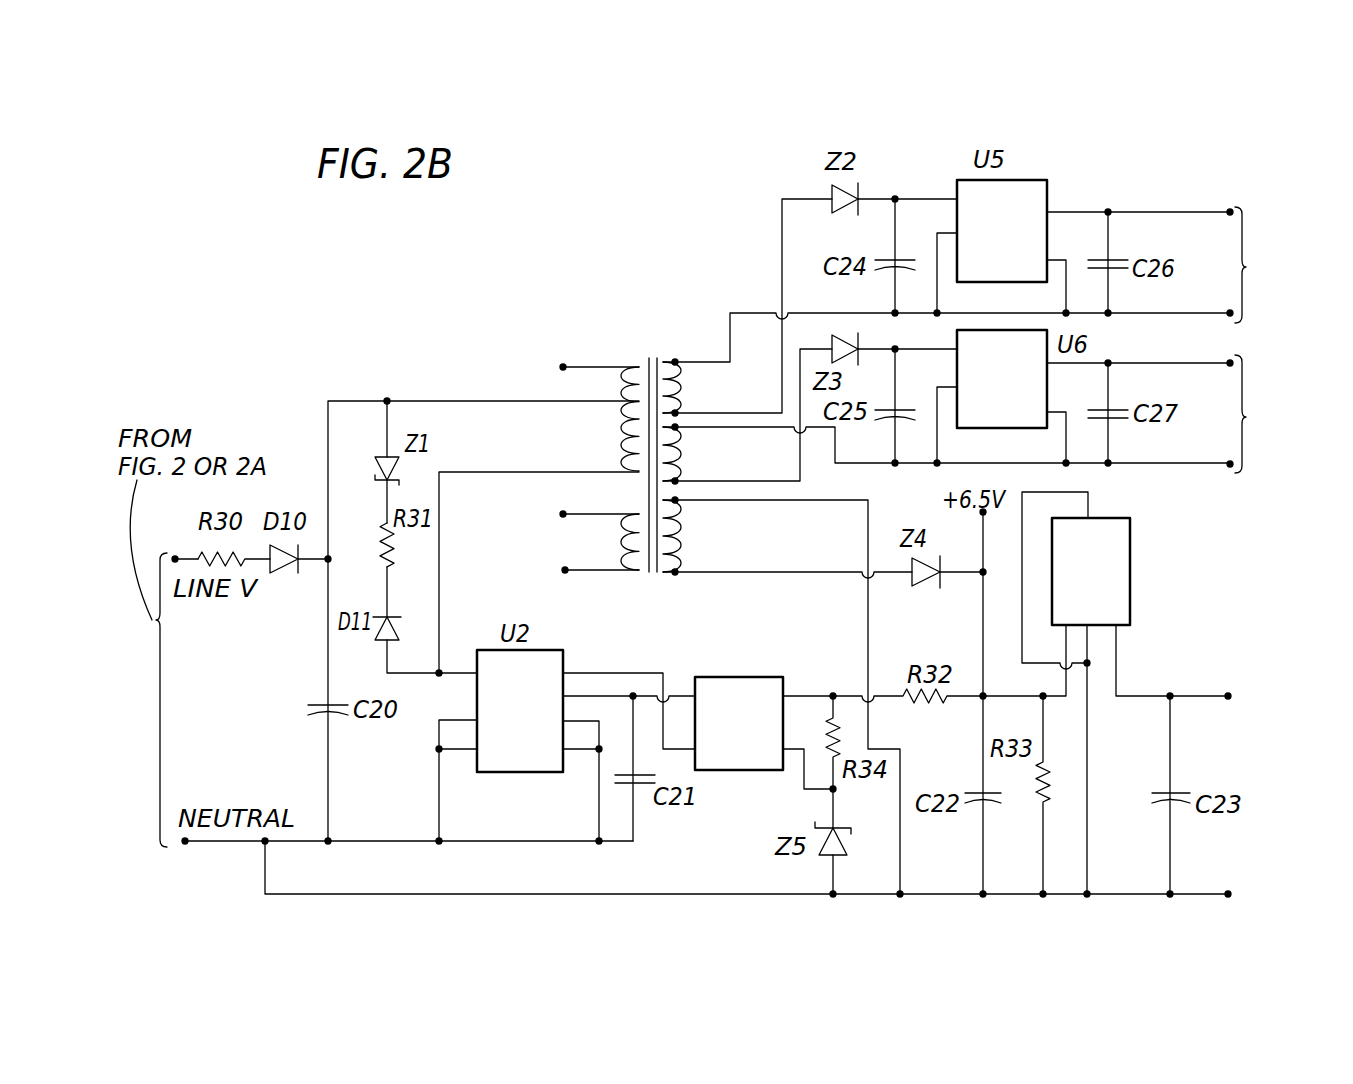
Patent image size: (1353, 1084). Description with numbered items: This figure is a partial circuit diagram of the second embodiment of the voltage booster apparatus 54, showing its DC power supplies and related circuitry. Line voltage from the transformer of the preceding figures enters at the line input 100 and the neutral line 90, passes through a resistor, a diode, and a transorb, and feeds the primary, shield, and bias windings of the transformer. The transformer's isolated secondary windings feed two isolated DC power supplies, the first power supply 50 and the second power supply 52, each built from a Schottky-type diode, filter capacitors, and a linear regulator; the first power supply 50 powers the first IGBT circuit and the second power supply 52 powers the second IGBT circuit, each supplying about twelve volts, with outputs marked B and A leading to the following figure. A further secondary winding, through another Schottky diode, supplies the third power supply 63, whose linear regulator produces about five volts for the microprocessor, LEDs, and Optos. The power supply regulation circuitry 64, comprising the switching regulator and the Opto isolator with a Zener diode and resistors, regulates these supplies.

The first power supply 50 is at (1184, 177).
The second power supply 52 is at (1241, 487).
The voltage booster apparatus 54 is at (572, 238).
The third power supply 63 is at (1247, 627).
The power supply regulation circuitry 64 is at (687, 652).
The neutral line terminal 90 is at (186, 844).
The line voltage input terminal 100 is at (176, 555).